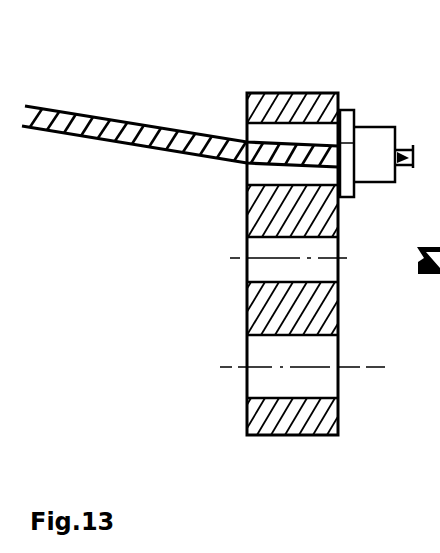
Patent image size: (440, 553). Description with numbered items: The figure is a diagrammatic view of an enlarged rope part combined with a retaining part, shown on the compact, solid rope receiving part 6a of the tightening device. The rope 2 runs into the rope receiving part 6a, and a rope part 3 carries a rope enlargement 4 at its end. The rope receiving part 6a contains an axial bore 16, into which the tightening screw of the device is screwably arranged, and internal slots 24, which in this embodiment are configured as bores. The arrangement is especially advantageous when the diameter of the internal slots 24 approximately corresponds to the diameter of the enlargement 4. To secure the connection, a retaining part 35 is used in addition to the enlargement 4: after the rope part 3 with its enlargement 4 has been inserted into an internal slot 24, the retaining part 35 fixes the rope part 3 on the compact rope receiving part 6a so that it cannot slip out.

The rope 2 is at (81, 117).
The compact rope receiving part 6a is at (287, 92).
The retaining part 35 is at (345, 107).
The rope enlargement 4 is at (374, 162).
The rope part 3 is at (413, 146).
The axial bore 16 is at (258, 265).
The internal slot 24 is at (258, 380).